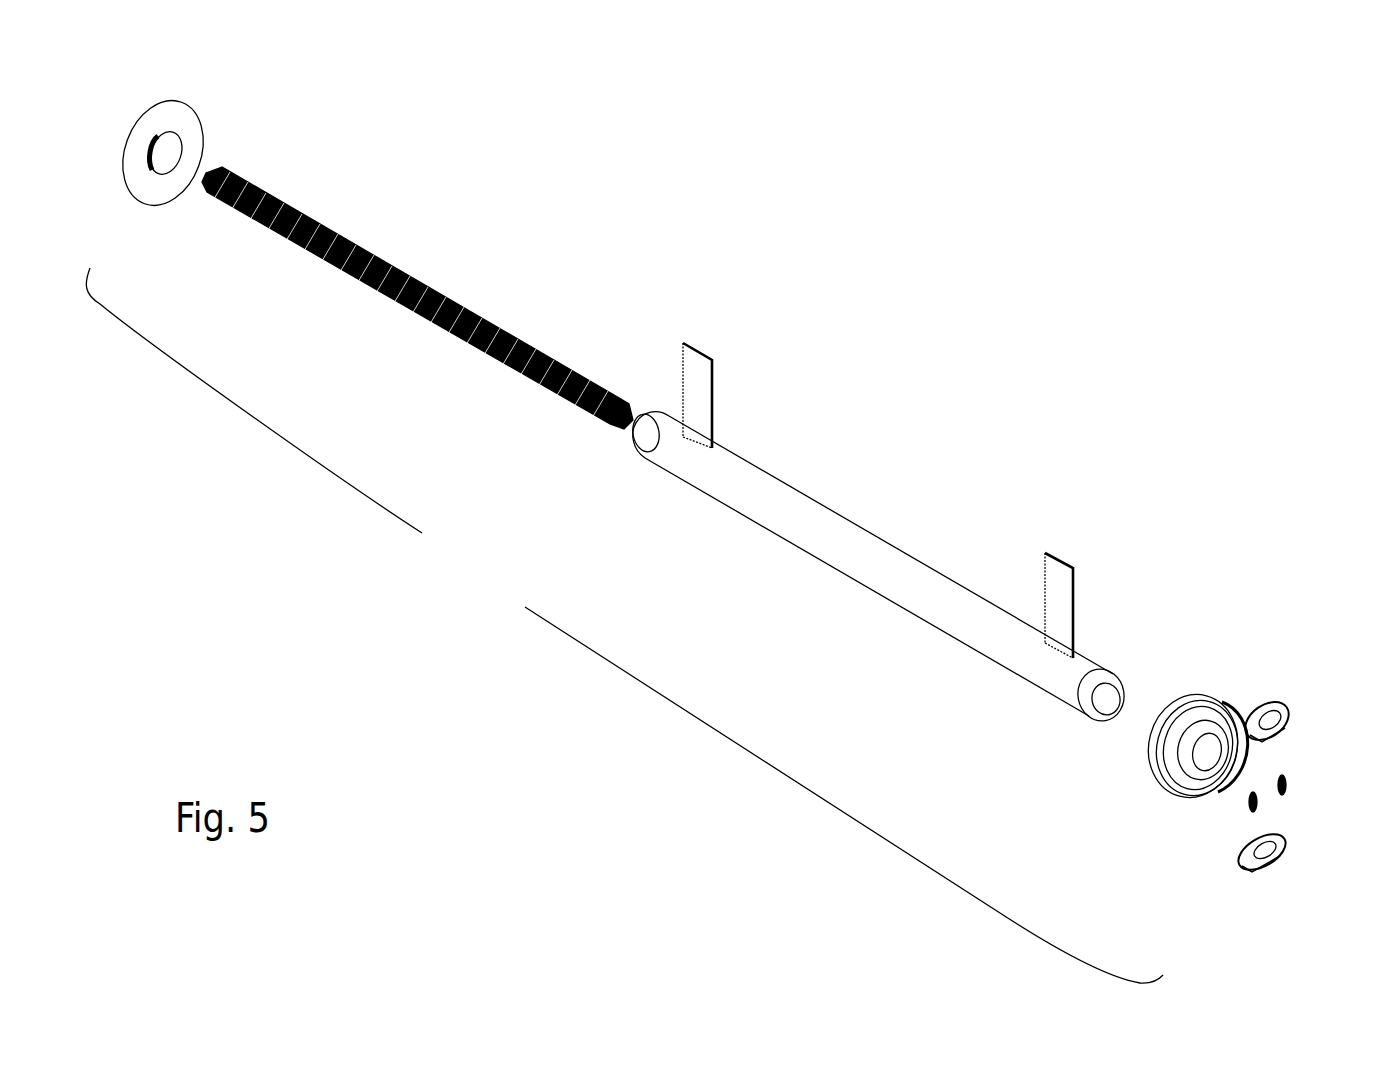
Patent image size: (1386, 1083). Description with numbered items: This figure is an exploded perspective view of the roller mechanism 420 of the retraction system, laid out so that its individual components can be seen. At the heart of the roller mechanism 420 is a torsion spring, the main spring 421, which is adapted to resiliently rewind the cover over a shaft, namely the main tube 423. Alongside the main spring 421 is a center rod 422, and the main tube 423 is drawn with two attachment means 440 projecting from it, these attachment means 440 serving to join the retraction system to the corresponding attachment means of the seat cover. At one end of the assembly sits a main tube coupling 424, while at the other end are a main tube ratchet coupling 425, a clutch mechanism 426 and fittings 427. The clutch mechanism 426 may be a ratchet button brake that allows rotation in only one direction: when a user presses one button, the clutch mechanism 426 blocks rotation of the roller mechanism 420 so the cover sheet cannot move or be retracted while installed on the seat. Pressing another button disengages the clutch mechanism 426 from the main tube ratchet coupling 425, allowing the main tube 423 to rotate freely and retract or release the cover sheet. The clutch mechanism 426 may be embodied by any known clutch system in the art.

The roller mechanism 420 is at (624, 625).
The torsion spring 421 is at (323, 222).
The center rod 422 is at (628, 403).
The main tube 423 is at (757, 482).
The main tube coupling 424 is at (190, 100).
The main tube ratchet coupling 425 is at (1211, 693).
The clutch mechanism 426 is at (1288, 697).
The fittings 427 is at (1287, 782).
The attachment means 440 is at (700, 352).